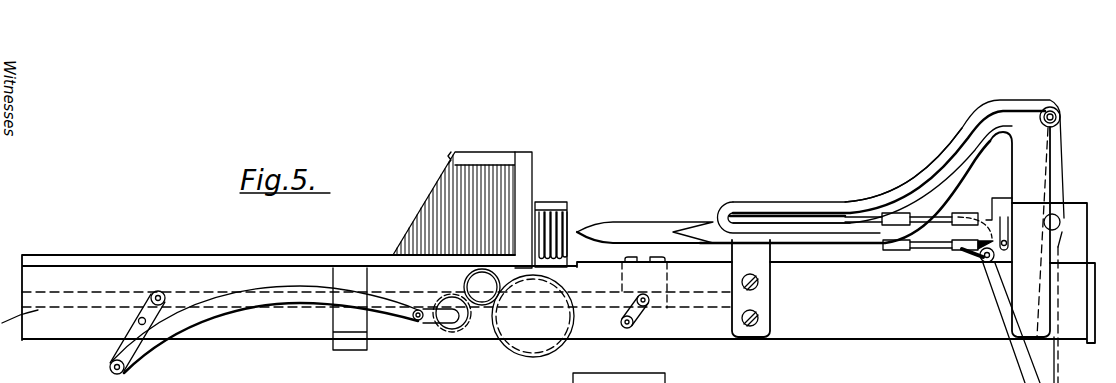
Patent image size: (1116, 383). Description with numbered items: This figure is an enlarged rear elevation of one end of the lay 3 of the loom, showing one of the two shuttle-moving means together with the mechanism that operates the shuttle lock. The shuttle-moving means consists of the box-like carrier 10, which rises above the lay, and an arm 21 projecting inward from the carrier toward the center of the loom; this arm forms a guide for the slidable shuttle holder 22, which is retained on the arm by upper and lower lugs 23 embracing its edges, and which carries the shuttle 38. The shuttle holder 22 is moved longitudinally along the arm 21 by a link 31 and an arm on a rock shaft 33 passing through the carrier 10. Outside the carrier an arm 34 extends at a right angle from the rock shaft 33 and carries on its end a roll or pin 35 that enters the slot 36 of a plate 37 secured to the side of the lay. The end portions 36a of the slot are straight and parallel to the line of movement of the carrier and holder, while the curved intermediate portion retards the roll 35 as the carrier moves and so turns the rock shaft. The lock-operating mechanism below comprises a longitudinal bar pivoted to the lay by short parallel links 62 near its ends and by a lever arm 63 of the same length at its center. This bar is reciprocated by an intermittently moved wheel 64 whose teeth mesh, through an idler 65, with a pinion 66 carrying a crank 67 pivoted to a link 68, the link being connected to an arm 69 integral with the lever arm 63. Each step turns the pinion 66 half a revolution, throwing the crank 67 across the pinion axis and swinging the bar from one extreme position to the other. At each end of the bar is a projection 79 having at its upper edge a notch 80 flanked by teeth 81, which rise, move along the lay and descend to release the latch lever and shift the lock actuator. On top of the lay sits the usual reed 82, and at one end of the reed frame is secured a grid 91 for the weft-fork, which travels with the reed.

The frame bar 3 is at (60, 275).
The carrier 10 is at (1002, 203).
The arm 21 is at (628, 222).
The shuttle holder 22 is at (855, 220).
The lugs 23 is at (898, 247).
The link 31 is at (1030, 352).
The rock shaft 33 is at (1058, 219).
The arm 34 is at (1060, 160).
The roll or pin 35 is at (1058, 108).
The slot 36 is at (983, 120).
The end portions of the slot 36a is at (1013, 113).
The plate 37 is at (937, 167).
The shuttle 38 is at (748, 215).
The links 62 is at (638, 316).
The lever arm 63 is at (147, 295).
The intermittently moved wheel 64 is at (558, 338).
The idler 65 is at (462, 284).
The pinion 66 is at (462, 332).
The crank 67 is at (443, 322).
The link 68 is at (313, 293).
The arm 69 is at (123, 345).
The projections 79 is at (660, 283).
The notch 80 is at (645, 257).
The teeth 81 is at (625, 257).
The reed 82 is at (460, 187).
The grid 91 is at (550, 204).